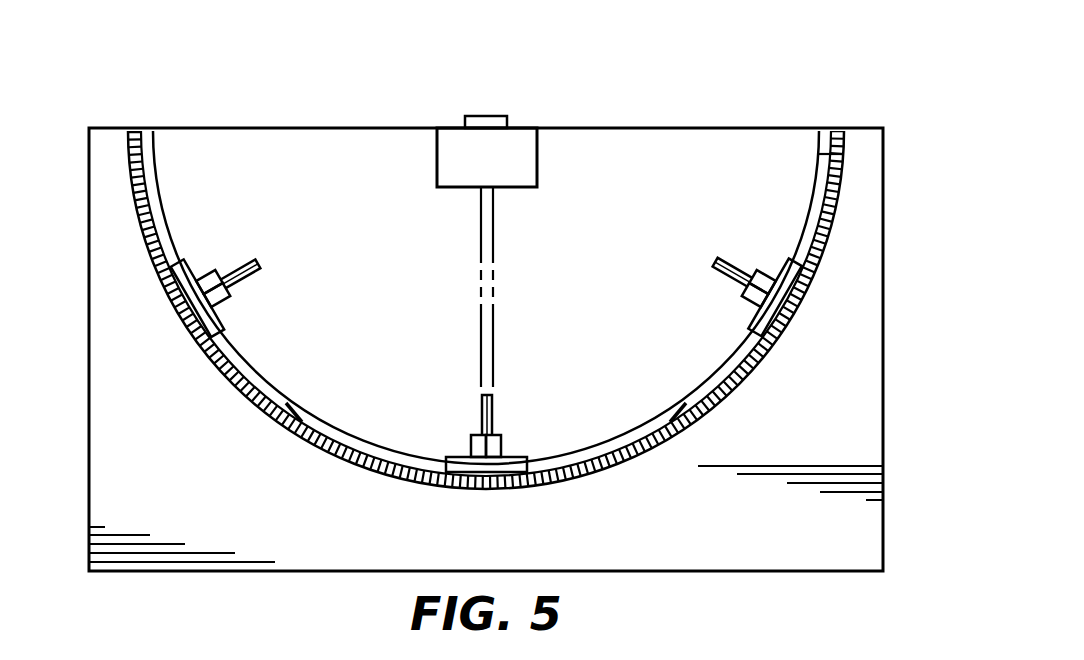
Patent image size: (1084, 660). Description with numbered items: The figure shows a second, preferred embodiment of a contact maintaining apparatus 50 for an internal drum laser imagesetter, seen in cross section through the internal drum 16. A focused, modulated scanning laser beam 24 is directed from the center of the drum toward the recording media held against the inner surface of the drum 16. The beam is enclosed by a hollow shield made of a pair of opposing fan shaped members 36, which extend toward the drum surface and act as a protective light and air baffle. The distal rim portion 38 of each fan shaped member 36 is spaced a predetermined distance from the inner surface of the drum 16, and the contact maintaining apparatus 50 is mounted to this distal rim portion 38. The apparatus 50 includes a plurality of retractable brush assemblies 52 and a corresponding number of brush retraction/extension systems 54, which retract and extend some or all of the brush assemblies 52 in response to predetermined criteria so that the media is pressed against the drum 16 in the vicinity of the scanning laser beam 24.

The contact maintaining apparatus 50 is at (131, 113).
The fan shaped member 36 is at (657, 183).
The distal rim portion 38 is at (830, 154).
The retractable brush assembly 52 is at (817, 400).
The internal drum 16 is at (728, 537).
The scanning laser beam 24 is at (490, 280).
The brush retraction/extension system 54 is at (472, 447).